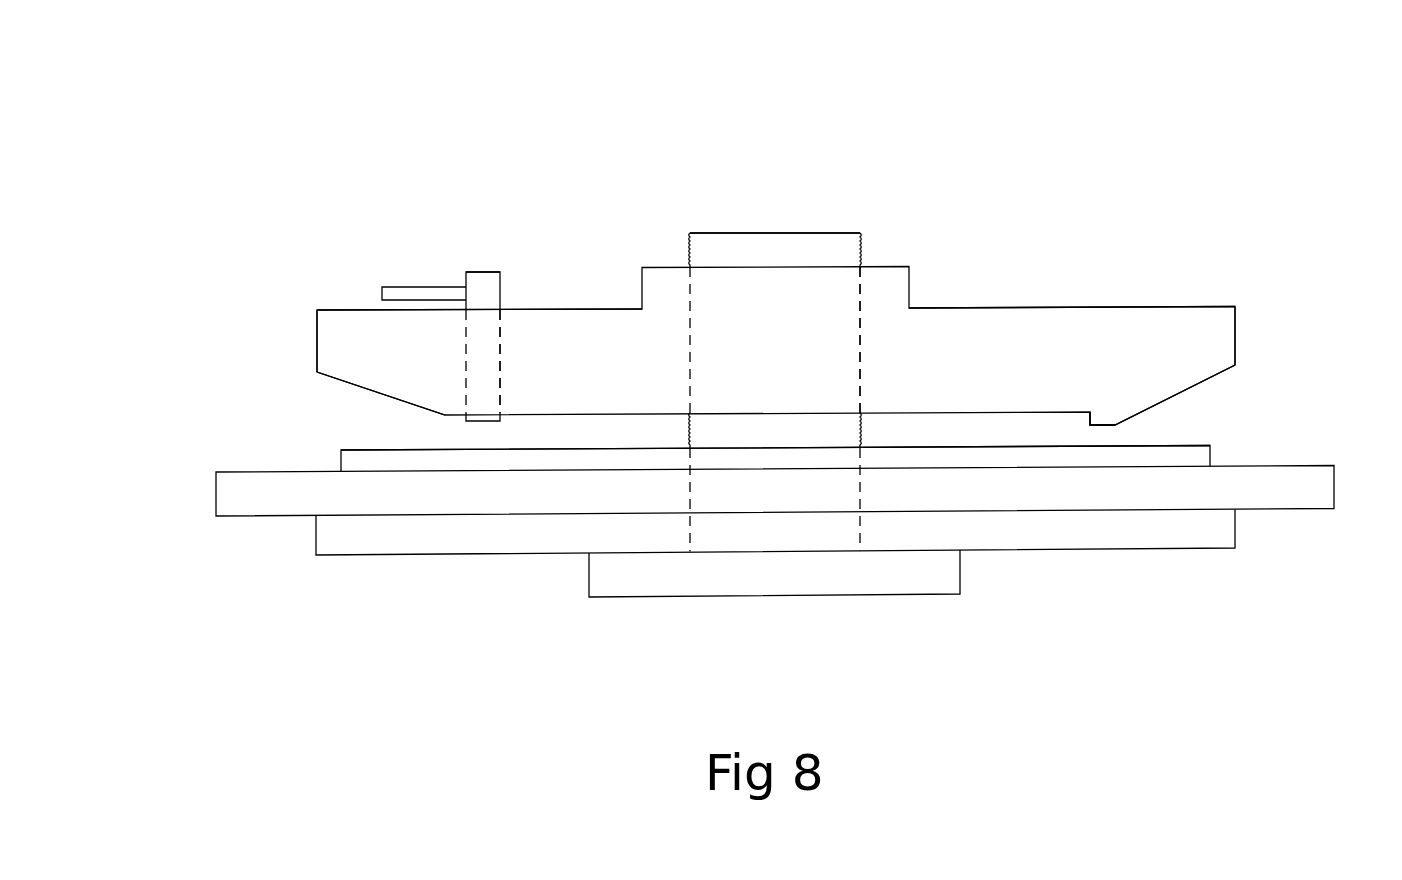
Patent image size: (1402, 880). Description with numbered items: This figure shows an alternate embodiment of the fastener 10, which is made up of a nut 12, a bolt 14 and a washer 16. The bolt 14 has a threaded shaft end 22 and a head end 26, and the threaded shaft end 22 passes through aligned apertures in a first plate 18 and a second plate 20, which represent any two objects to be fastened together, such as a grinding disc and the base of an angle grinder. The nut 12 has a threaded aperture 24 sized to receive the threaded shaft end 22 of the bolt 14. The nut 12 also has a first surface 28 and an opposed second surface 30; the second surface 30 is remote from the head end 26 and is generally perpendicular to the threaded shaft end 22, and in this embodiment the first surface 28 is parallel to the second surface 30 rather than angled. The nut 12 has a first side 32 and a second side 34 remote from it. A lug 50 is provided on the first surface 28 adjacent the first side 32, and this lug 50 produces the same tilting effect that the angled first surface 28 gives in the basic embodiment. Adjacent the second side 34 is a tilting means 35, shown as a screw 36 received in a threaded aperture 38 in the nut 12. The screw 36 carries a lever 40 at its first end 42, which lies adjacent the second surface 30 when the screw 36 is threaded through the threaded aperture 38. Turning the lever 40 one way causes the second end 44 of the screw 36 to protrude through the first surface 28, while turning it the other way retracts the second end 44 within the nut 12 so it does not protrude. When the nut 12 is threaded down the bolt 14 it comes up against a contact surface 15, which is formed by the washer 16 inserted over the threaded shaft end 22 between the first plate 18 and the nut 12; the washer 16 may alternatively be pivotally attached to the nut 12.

The fastener 10 is at (1113, 102).
The nut 12 is at (1039, 322).
The bolt 14 is at (722, 435).
The contact surface 15 is at (1122, 445).
The washer 16 is at (1185, 459).
The first plate 18 is at (263, 506).
The second plate 20 is at (397, 535).
The threaded shaft end 22 is at (690, 248).
The threaded aperture 24 is at (862, 315).
The head end 26 is at (927, 572).
The first surface 28 is at (1062, 411).
The second surface 30 is at (1153, 306).
The first side 32 is at (1237, 305).
The second side 34 is at (315, 308).
The tilting means 35 is at (429, 247).
The screw 36 is at (474, 292).
The threaded aperture 38 is at (502, 352).
The lever 40 is at (383, 286).
The first end 42 is at (500, 272).
The second end 44 is at (445, 422).
The lug 50 is at (1135, 413).